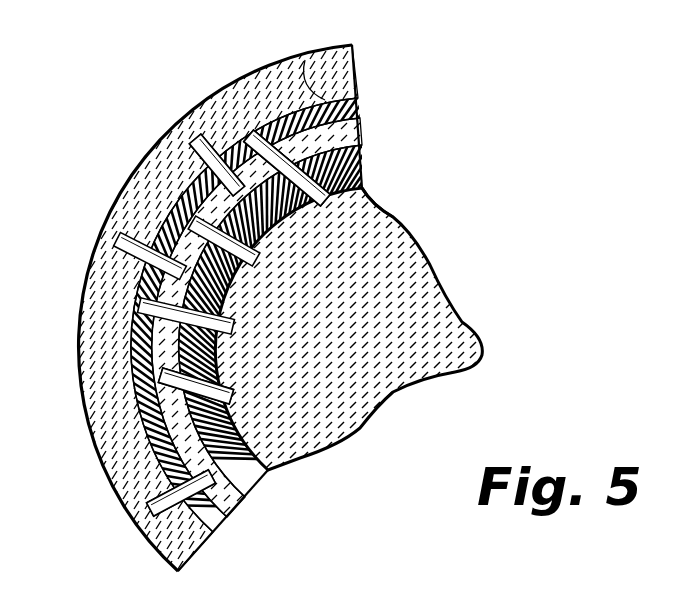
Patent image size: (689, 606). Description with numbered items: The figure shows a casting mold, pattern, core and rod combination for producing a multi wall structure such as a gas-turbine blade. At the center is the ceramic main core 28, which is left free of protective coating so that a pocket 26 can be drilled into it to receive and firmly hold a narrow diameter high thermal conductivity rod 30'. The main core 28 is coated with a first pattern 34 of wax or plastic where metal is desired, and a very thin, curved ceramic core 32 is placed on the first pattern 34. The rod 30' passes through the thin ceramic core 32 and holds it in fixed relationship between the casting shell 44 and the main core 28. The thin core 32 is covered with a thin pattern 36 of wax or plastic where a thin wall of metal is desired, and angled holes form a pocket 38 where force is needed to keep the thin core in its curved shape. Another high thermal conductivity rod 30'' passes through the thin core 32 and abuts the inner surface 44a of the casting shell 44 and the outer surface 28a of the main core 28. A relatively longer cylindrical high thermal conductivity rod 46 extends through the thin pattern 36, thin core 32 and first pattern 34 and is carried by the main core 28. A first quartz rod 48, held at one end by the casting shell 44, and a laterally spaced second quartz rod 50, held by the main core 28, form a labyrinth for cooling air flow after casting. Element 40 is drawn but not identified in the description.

The pocket 26 is at (325, 210).
The main core 28 is at (385, 405).
The outer surface of the main core 28a is at (393, 218).
The high thermal conductivity rod 30' is at (204, 292).
The high thermal conductivity rod 30'' is at (284, 119).
The thin ceramic core 32 is at (360, 128).
The first pattern 34 is at (364, 150).
The thin pattern 36 is at (356, 100).
The pocket 38 is at (203, 135).
The rod 40 is at (197, 142).
The casting shell 44 is at (348, 72).
The inner surface of the casting shell 44a is at (305, 60).
The high thermal conductivity rod 46 is at (138, 308).
The first rod 48 is at (125, 240).
The second rod 50 is at (257, 264).